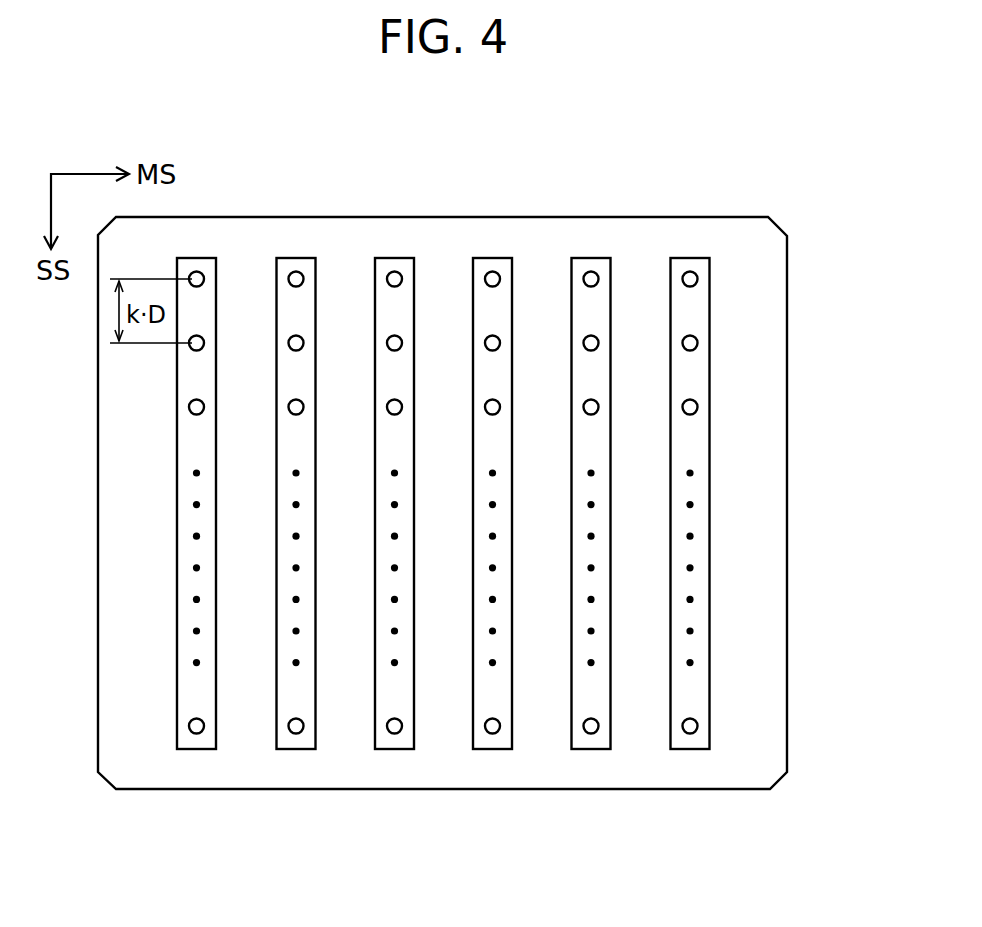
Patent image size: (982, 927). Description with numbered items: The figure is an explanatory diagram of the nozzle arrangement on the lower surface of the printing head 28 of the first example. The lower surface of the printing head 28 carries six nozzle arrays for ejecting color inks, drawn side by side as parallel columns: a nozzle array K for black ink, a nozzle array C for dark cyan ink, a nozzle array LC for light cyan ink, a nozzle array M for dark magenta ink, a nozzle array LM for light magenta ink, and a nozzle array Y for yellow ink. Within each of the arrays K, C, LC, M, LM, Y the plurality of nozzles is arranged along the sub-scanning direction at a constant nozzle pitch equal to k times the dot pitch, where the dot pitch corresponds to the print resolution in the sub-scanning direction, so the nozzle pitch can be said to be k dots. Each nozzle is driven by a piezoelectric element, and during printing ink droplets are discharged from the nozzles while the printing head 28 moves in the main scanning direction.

The printing head 28 is at (787, 365).
The nozzle array K is at (193, 569).
The nozzle array C is at (290, 569).
The nozzle array LC is at (386, 569).
The nozzle array M is at (487, 569).
The nozzle array LM is at (582, 569).
The nozzle array Y is at (686, 569).